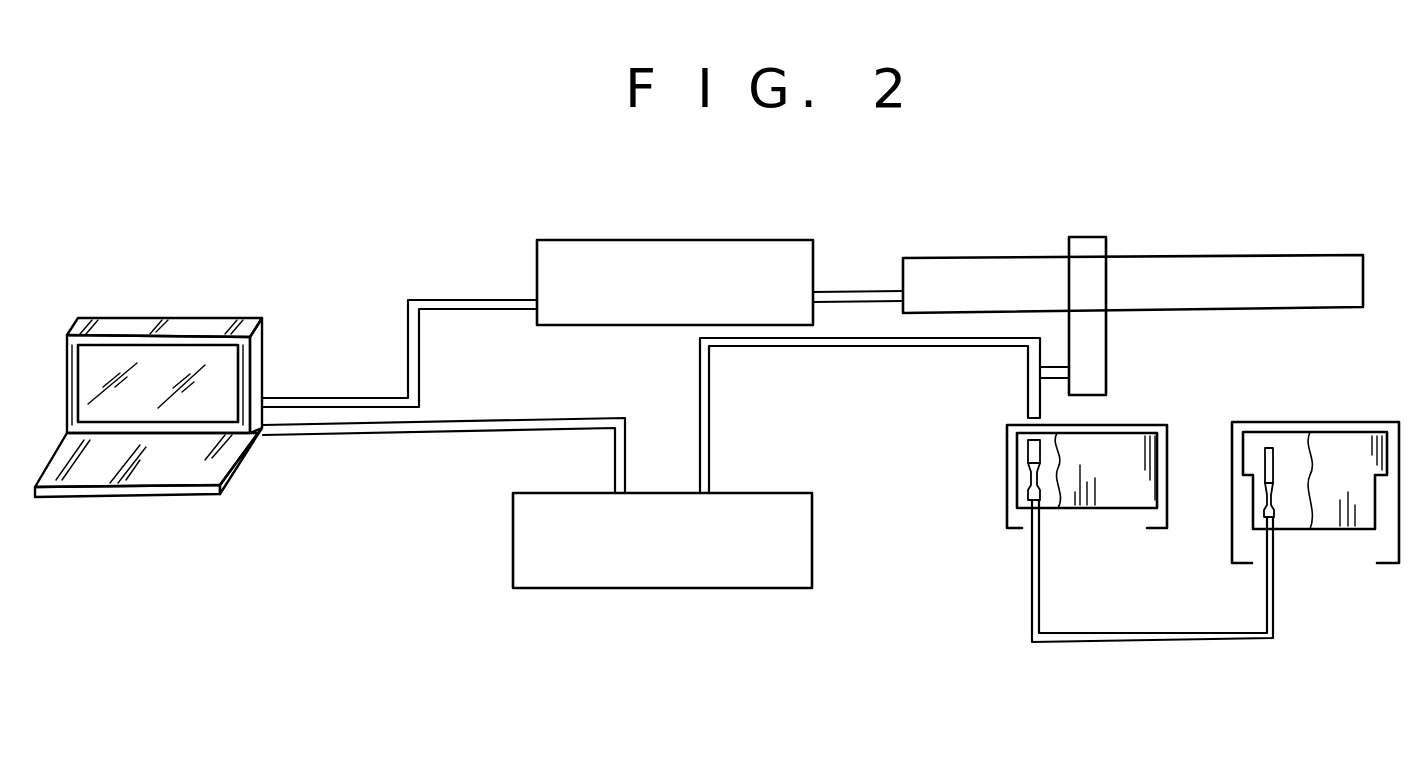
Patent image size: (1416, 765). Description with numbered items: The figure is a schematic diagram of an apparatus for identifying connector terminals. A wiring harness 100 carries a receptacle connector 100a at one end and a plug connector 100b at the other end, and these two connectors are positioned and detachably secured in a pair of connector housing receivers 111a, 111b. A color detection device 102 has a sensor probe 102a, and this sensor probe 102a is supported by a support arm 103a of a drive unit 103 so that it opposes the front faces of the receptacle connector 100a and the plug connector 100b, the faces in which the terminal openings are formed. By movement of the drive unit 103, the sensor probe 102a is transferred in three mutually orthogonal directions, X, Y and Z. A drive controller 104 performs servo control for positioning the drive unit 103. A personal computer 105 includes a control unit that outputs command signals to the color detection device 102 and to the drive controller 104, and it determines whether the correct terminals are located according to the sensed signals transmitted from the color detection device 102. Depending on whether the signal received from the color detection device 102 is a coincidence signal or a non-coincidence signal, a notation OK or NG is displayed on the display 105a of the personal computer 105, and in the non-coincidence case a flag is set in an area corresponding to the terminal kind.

The wiring harness 100 is at (1152, 640).
The receptacle connector 100a is at (1105, 497).
The plug connector 100b is at (1327, 522).
The color detection device 102 is at (785, 588).
The sensor probe 102a is at (1040, 398).
The drive unit 103 is at (1177, 255).
The support arm 103a is at (1055, 363).
The drive controller 104 is at (683, 238).
The personal computer 105 is at (200, 315).
The display 105a is at (117, 357).
The connector housing receiver 111a is at (1123, 425).
The connector housing receiver 111b is at (1327, 422).